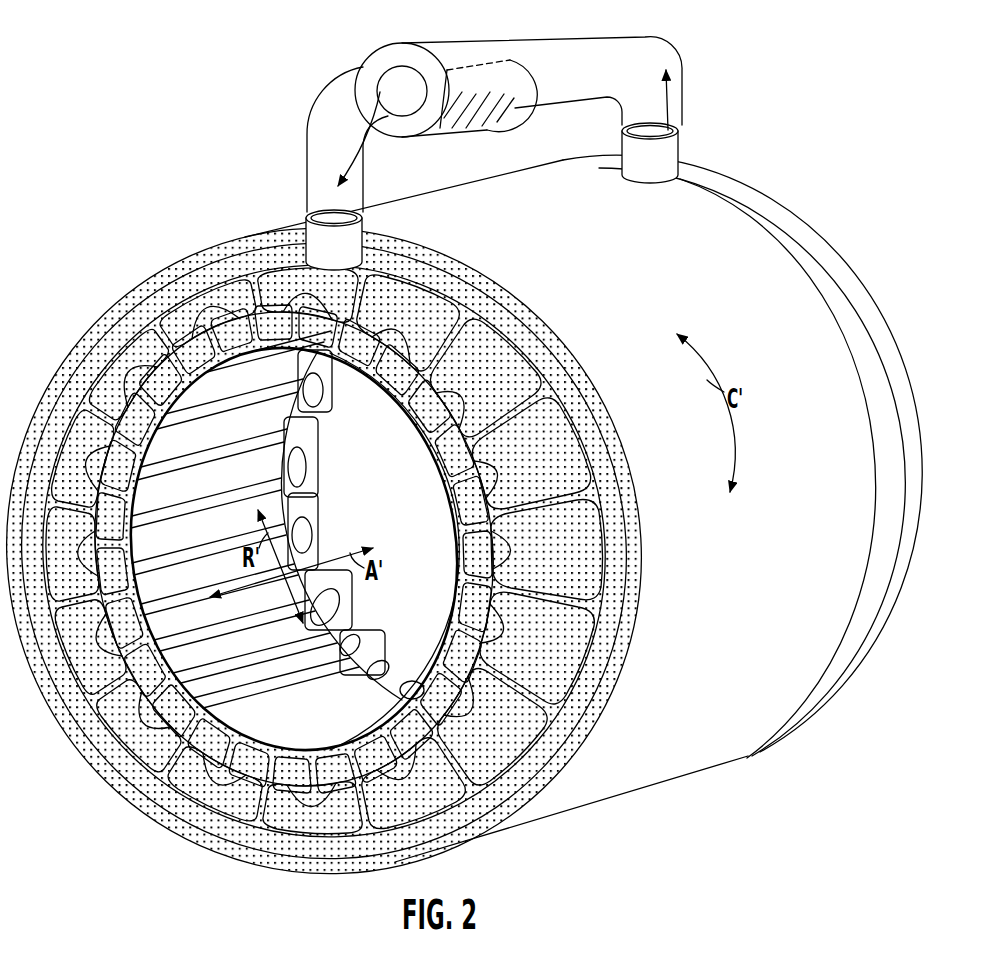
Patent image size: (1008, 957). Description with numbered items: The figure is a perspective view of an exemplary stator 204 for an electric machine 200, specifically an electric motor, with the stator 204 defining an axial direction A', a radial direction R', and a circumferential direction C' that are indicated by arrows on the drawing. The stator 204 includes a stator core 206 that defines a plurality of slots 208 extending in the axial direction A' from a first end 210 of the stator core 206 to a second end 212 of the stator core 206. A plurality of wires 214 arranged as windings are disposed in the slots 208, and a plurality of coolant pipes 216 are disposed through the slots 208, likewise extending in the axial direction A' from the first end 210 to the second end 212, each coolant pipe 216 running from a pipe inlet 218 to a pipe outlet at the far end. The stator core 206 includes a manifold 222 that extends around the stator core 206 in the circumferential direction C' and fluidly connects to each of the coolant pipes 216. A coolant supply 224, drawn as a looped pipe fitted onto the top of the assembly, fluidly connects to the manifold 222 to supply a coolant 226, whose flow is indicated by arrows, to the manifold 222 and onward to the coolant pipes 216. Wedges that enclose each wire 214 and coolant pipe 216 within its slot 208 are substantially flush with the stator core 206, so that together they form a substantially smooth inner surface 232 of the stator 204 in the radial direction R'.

The electric machine 200 is at (216, 96).
The stator 204 is at (126, 194).
The stator core 206 is at (735, 250).
The slots 208 is at (104, 362).
The first end 210 is at (538, 346).
The second end 212 is at (814, 292).
The wires 214 is at (432, 372).
The coolant pipes 216 is at (198, 298).
The pipe inlet 218 is at (350, 296).
The manifold 222 is at (588, 592).
The coolant supply 224 is at (471, 44).
The coolant 226 is at (670, 100).
The inner surface 232 is at (250, 706).